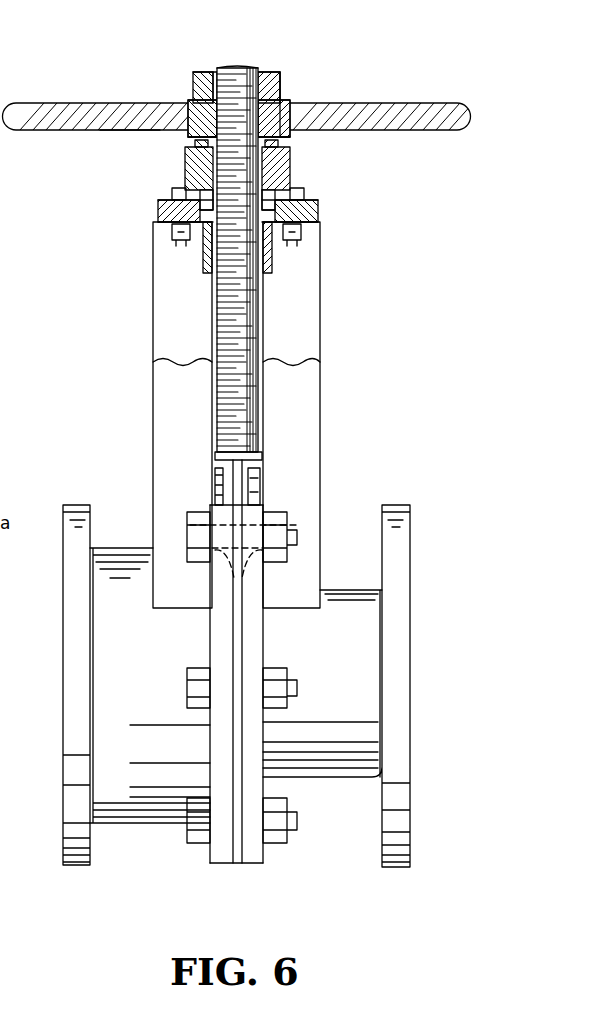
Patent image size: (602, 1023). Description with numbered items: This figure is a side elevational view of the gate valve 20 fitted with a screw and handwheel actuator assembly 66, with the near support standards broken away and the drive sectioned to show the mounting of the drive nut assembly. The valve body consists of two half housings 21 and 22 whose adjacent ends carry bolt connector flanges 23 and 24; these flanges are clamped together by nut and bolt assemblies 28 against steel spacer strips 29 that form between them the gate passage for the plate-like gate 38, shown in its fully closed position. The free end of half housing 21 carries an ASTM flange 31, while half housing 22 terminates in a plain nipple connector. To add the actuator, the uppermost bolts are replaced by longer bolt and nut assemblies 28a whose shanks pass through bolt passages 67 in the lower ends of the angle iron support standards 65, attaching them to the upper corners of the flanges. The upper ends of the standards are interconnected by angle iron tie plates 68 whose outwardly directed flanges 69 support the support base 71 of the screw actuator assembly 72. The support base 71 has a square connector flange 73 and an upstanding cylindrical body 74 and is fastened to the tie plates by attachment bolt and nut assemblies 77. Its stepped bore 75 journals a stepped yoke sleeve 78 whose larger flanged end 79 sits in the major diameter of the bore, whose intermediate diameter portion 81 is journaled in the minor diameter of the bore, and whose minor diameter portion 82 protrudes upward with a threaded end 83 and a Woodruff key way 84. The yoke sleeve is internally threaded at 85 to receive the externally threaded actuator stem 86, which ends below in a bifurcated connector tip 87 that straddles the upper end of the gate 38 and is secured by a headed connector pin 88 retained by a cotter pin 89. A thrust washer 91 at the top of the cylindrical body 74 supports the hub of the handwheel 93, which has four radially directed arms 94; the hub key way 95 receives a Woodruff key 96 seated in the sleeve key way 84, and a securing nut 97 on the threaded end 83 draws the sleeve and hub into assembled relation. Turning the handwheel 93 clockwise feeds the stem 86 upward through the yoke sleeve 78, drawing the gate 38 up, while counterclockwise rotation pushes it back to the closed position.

The gate valve 20 is at (326, 777).
The half housing 21 is at (135, 667).
The half housing 22 is at (348, 606).
The bolt connector flange 23 is at (210, 745).
The bolt connector flange 24 is at (268, 737).
The nut and bolt assemblies 28 is at (190, 690).
The longer bolt and nut assemblies 28a is at (187, 533).
The steel spacer strips 29 is at (235, 657).
The ASTM flange 31 is at (70, 838).
The gate 38 is at (243, 472).
The angle iron support standards 65 is at (153, 420).
The screw and handwheel actuator assembly 66 is at (153, 300).
The bolt passages 67 is at (226, 566).
The angle iron tie plates 68 is at (203, 271).
The outwardly directed flanges 69 is at (158, 216).
The support base 71 is at (320, 202).
The screw actuator assembly 72 is at (262, 66).
The square connector flange 73 is at (312, 228).
The upstanding cylindrical body 74 is at (284, 168).
The stepped bore 75 is at (274, 234).
The attachment bolt and nut assemblies 77 is at (172, 195).
The stepped yoke sleeve 78 is at (197, 171).
The larger flanged end 79 is at (190, 207).
The intermediate diameter portion 81 is at (305, 172).
The minor diameter portion 82 is at (212, 128).
The threaded end 83 is at (215, 80).
The Woodruff key way 84 is at (296, 103).
The internally threaded portion 85 is at (238, 72).
The actuator screw or stem 86 is at (248, 68).
The bifurcated connector tip 87 is at (222, 460).
The headed connector pin 88 is at (259, 486).
The cotter pin 89 is at (215, 474).
The thrust washer 91 is at (195, 145).
The handwheel 93 is at (131, 104).
The radially directed arms 94 is at (40, 105).
The key way 95 is at (290, 100).
The Woodruff key 96 is at (300, 132).
The securing nut 97 is at (193, 80).